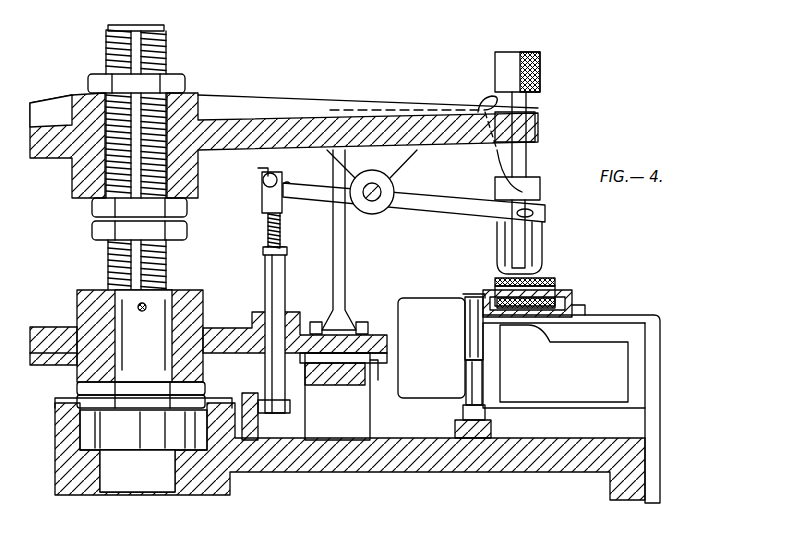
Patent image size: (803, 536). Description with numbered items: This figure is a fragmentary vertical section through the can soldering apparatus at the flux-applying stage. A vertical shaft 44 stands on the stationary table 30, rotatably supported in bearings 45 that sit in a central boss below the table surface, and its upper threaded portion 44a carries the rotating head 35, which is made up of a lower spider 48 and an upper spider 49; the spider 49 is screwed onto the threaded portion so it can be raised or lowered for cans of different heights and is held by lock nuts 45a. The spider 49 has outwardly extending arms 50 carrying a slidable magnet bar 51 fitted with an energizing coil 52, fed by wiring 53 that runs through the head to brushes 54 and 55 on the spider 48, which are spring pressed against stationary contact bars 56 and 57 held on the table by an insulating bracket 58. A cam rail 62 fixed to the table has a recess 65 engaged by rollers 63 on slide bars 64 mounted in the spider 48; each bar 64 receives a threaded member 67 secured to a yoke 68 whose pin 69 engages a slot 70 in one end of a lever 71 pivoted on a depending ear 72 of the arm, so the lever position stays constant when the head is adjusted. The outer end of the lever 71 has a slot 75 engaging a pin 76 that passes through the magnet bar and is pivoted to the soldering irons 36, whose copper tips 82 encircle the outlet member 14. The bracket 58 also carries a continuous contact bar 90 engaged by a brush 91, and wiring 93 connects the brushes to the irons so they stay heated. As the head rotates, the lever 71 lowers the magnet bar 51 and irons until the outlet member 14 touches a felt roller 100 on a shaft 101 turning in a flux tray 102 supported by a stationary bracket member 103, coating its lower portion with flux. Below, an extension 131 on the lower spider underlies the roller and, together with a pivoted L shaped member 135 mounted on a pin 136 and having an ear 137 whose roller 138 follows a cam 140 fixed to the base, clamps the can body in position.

The outlet member 14 is at (512, 262).
The table 30 is at (470, 472).
The rotating head 35 is at (265, 130).
The soldering irons 36 is at (498, 250).
The vertical shaft 44 is at (142, 312).
The threaded portion 44a is at (165, 54).
The bearings 45 is at (143, 424).
The lock nuts 45a is at (186, 80).
The spider 48 is at (238, 330).
The spider 49 is at (390, 112).
The arms 50 is at (538, 125).
The magnet bar 51 is at (528, 152).
The energizing coil 52 is at (542, 72).
The wiring 53 is at (480, 97).
The brush 54 is at (360, 338).
The brush 55 is at (378, 372).
The contact bar 56 is at (333, 383).
The contact bar 57 is at (358, 383).
The bracket 58 is at (343, 396).
The cam rail 62 is at (260, 429).
The rollers 63 is at (258, 406).
The slide bars 64 is at (285, 284).
The recess 65 is at (247, 387).
The threaded member 67 is at (282, 233).
The yoke 68 is at (283, 206).
The pin 69 is at (268, 174).
The slot 70 is at (288, 182).
The lever 71 is at (435, 205).
The depending ear 72 is at (372, 164).
The slot 75 is at (548, 212).
The pin 76 is at (522, 212).
The tips 82 is at (495, 282).
The contact bar 90 is at (326, 374).
The brush 91 is at (318, 335).
The wiring 93 is at (524, 183).
The felt roller 100 is at (522, 280).
The shaft 101 is at (536, 292).
The tray 102 is at (562, 306).
The bracket member 103 is at (661, 338).
The extension 131 is at (564, 363).
The L shaped member 135 is at (424, 308).
The pin 136 is at (462, 300).
The ear 137 is at (452, 404).
The roller 138 is at (488, 410).
The cam 140 is at (493, 428).